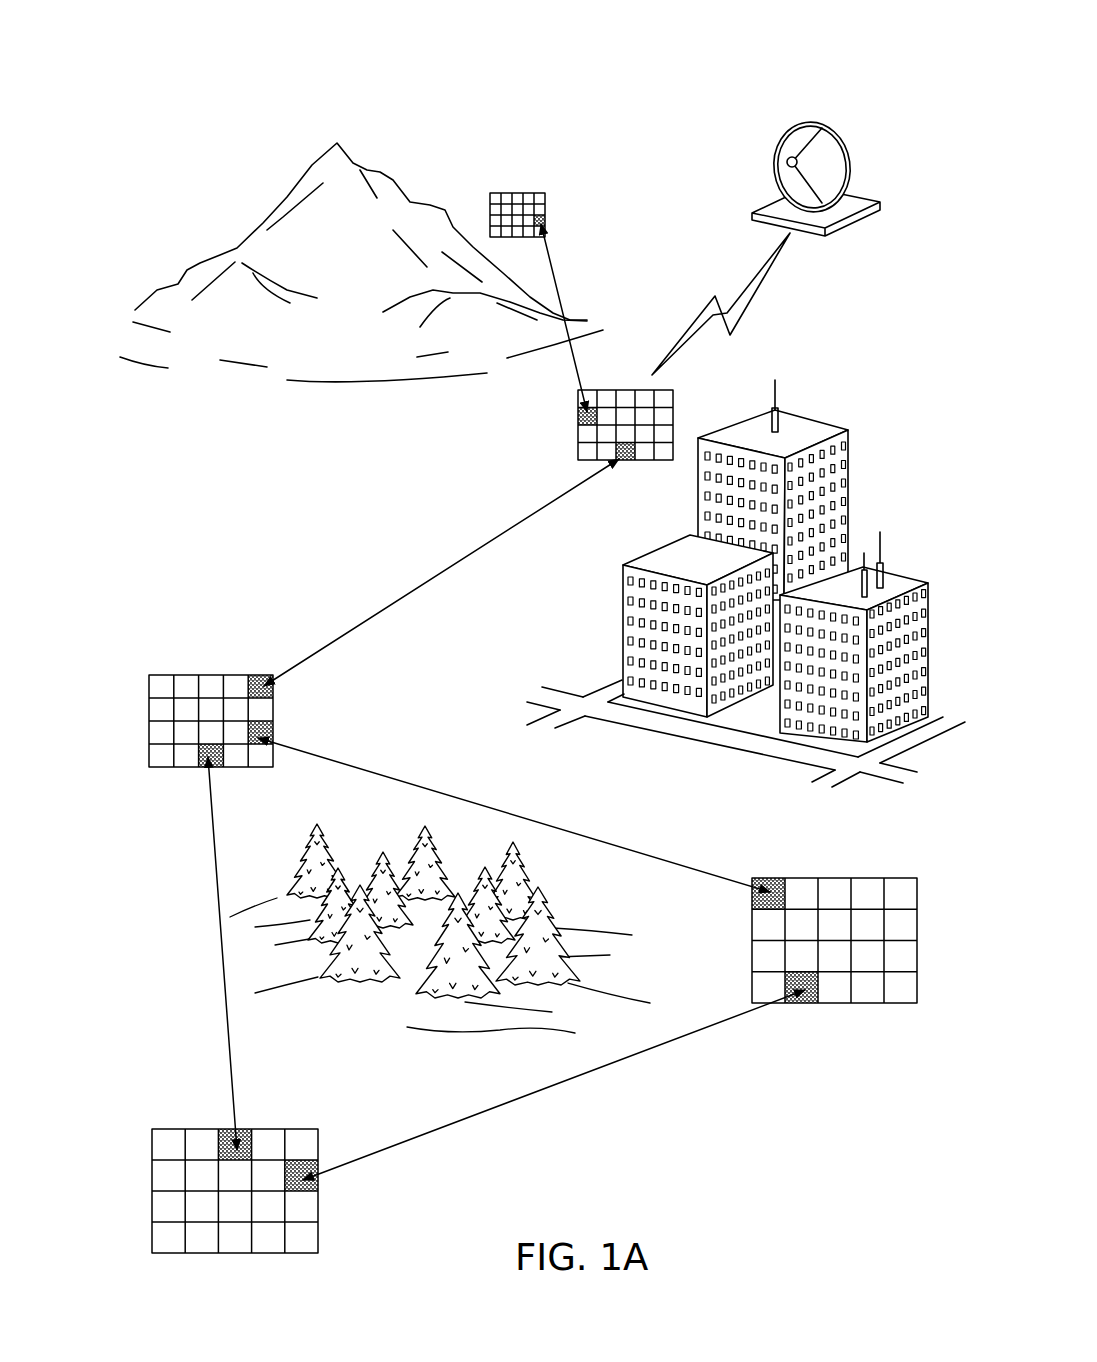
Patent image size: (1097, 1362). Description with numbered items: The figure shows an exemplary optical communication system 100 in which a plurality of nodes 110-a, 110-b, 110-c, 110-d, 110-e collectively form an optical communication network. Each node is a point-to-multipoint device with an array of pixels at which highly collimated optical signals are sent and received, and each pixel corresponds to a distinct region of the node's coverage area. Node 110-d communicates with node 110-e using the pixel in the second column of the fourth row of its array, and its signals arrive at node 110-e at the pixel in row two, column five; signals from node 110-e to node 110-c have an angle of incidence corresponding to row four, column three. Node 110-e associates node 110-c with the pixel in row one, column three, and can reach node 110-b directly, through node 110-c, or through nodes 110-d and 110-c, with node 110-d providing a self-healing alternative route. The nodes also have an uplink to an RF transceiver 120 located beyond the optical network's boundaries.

The optical communication system 100 is at (695, 92).
The node 110-a is at (518, 193).
The node 110-b is at (580, 392).
The node 110-c is at (237, 675).
The node 110-d is at (798, 878).
The node 110-e is at (270, 1129).
The RF transceiver 120 is at (848, 193).